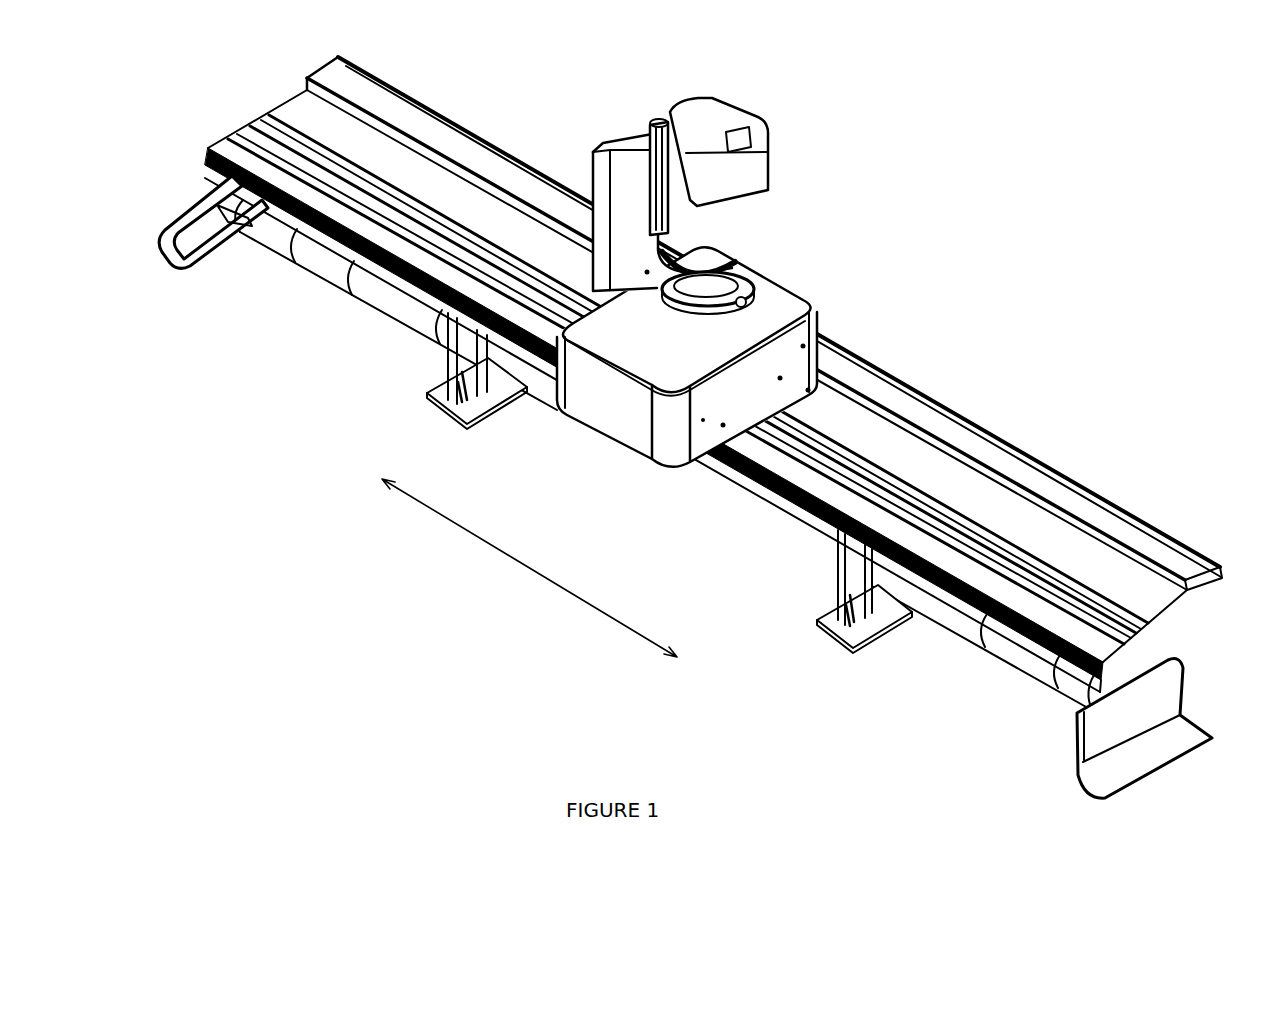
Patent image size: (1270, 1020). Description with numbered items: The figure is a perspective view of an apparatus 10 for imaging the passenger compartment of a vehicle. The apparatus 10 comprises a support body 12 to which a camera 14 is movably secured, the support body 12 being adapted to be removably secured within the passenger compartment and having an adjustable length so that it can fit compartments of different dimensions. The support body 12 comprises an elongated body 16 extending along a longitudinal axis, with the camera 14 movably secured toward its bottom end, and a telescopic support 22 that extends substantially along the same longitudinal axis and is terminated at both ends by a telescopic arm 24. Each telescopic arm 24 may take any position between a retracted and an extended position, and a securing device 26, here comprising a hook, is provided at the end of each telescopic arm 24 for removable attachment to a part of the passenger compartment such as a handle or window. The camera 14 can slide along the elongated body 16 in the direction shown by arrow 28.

The apparatus 10 is at (1070, 153).
The support body 12 is at (908, 304).
The camera 14 is at (742, 166).
The elongated body 16 is at (1008, 507).
The telescopic support 22 is at (738, 497).
The telescopic arm 24 is at (330, 257).
The securing device 26 is at (212, 220).
The arrow 28 is at (553, 583).